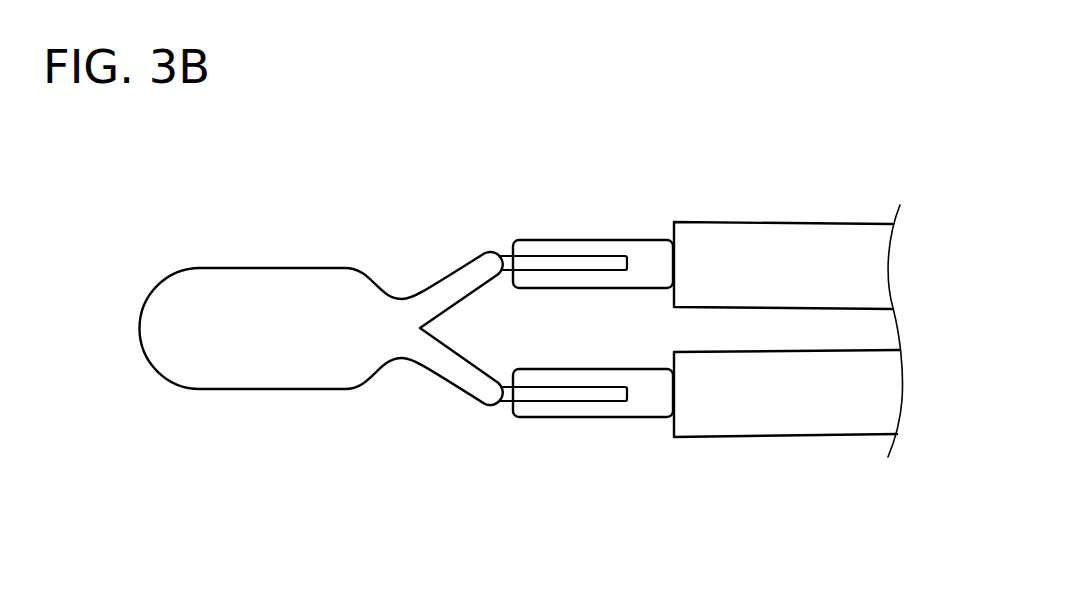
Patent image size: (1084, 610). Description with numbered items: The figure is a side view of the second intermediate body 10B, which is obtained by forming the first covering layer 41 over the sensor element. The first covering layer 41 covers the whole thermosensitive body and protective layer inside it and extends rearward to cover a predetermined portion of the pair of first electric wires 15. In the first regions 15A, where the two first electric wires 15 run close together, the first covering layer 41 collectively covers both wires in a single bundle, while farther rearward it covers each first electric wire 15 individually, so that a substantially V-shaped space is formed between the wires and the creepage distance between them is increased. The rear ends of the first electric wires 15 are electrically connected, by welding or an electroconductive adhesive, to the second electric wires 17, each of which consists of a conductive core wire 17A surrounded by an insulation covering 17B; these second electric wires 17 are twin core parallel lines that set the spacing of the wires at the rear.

The first covering layer 41 is at (190, 390).
The first electric wire 15 is at (541, 330).
The first region 15A is at (542, 256).
The second electric wire 17 is at (706, 330).
The core wire 17A is at (633, 240).
The insulation covering 17B is at (710, 222).
The second intermediate body 10B is at (708, 330).